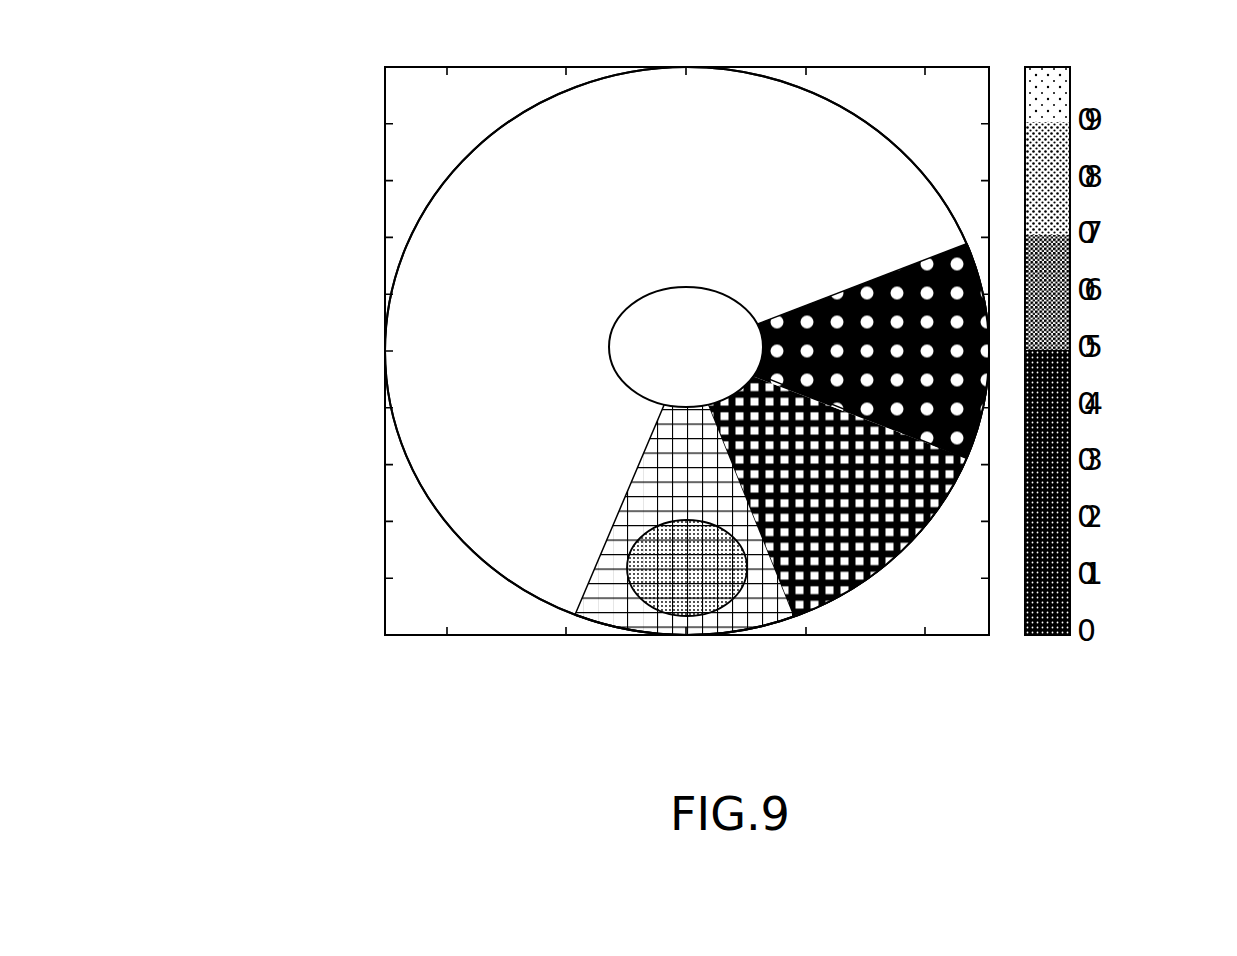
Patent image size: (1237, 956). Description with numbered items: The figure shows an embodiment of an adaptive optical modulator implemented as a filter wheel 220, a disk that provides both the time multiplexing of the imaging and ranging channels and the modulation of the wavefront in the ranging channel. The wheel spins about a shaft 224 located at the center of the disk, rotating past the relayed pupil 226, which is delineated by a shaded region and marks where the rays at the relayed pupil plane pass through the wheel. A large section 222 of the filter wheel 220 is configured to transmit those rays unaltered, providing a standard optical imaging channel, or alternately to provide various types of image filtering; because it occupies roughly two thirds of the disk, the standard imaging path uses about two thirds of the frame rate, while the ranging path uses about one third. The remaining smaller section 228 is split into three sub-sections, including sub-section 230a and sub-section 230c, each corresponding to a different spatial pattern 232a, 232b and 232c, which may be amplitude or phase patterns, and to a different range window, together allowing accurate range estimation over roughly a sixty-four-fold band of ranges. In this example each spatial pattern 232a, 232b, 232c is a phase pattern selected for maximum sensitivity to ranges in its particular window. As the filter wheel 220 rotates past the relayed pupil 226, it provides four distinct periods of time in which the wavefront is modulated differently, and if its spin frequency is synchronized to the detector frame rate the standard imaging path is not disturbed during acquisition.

The filter wheel 220 is at (450, 167).
The large section 222 is at (473, 273).
The shaft 224 is at (683, 343).
The relayed pupil 226 is at (660, 557).
The smaller section 228 is at (740, 662).
The sub-section 230a is at (605, 603).
The sub-section 230c is at (833, 408).
The spatial pattern 232a is at (623, 598).
The spatial pattern 232b is at (853, 523).
The spatial pattern 232c is at (927, 348).